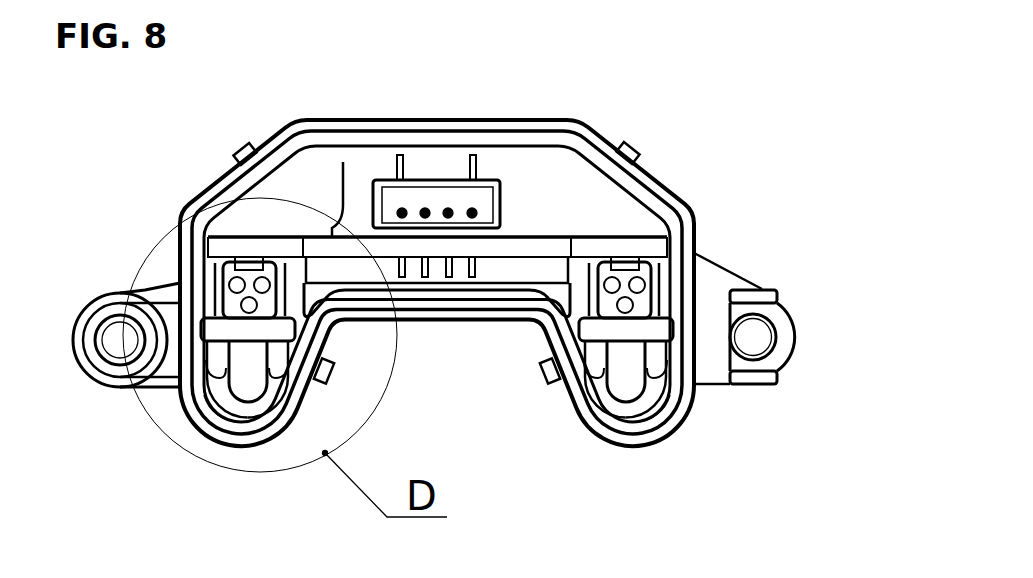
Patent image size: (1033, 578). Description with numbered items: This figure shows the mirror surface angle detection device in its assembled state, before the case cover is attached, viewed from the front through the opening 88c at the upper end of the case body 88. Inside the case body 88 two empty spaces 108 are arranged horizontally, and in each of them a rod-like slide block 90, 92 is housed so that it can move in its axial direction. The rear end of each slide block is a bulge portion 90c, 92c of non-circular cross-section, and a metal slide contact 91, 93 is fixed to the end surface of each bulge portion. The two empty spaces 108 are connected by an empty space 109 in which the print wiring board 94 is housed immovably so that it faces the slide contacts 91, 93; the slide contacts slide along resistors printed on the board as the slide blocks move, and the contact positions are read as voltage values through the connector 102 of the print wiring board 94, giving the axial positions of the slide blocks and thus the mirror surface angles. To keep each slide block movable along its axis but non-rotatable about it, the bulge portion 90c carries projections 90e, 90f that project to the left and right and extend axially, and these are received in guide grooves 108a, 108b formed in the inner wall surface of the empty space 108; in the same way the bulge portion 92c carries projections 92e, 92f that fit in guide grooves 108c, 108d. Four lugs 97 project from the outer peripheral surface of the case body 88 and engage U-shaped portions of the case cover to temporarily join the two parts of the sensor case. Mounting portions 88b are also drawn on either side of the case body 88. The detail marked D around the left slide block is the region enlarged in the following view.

The case body 88 is at (663, 182).
The mounting lug 88b is at (100, 382).
The opening 88c is at (583, 182).
The slide block 90 is at (182, 407).
The bulge portion 90c is at (247, 343).
The projection 90e is at (221, 380).
The projection 90f is at (287, 342).
The slide contact 91 is at (245, 274).
The slide block 92 is at (671, 390).
The bulge portion 92c is at (623, 342).
The projection 92e is at (592, 342).
The projection 92f is at (692, 377).
The slide contact 93 is at (632, 277).
The print wiring board 94 is at (514, 247).
The lug 97 is at (240, 147).
The connector 102 is at (437, 195).
The empty space 108 is at (202, 422).
The guide groove 108a is at (205, 360).
The guide groove 108b is at (322, 357).
The guide groove 108c is at (633, 328).
The guide groove 108d is at (770, 386).
The empty space 109 is at (357, 198).